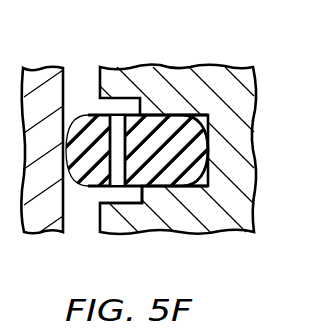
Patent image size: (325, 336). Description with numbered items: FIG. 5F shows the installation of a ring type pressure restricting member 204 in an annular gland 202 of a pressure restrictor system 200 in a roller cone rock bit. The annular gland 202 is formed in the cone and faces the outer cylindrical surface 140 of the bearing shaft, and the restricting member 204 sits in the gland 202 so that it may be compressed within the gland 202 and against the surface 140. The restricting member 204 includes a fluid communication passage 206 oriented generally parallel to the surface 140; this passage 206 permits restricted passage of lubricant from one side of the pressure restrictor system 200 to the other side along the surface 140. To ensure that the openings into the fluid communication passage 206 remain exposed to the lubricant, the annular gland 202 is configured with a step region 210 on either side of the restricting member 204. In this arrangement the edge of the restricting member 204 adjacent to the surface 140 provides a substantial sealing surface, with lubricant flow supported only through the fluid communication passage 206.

The outer cylindrical surface 140 is at (63, 203).
The pressure restrictor system 200 is at (180, 80).
The annular gland 202 is at (214, 132).
The pressure restricting member 204 is at (84, 120).
The fluid communication passage 206 is at (119, 126).
The step region 210 is at (133, 203).